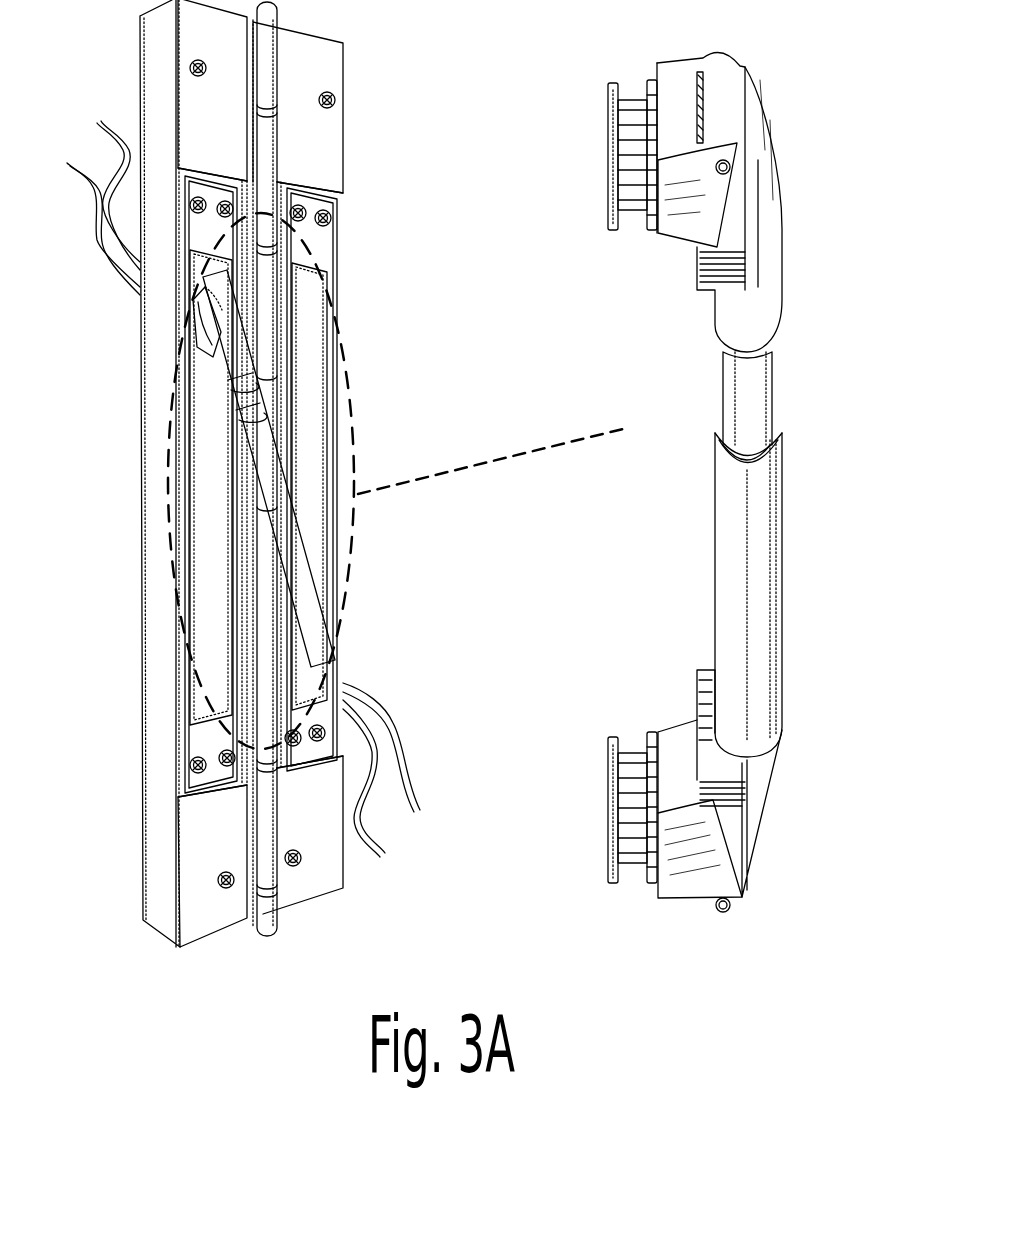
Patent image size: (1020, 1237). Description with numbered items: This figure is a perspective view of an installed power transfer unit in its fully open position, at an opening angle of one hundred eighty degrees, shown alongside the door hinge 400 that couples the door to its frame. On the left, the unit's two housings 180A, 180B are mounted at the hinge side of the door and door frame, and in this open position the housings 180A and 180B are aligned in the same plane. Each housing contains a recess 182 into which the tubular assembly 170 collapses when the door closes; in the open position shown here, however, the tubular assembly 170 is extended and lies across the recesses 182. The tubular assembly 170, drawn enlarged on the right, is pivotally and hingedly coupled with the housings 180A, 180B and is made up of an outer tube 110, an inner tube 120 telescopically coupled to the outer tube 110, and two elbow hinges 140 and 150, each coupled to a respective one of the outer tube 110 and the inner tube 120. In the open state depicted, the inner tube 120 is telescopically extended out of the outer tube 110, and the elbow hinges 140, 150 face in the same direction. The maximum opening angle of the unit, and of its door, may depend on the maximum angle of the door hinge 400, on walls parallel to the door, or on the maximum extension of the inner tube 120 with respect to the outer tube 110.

The door hinge 400 is at (197, 868).
The housing 180A is at (323, 247).
The housing 180B is at (198, 728).
The recess 182 is at (200, 407).
The tubular assembly 170 is at (775, 58).
The elbow hinge 150 is at (670, 238).
The inner tube 120 is at (775, 382).
The outer tube 110 is at (783, 592).
The elbow hinge 140 is at (668, 732).